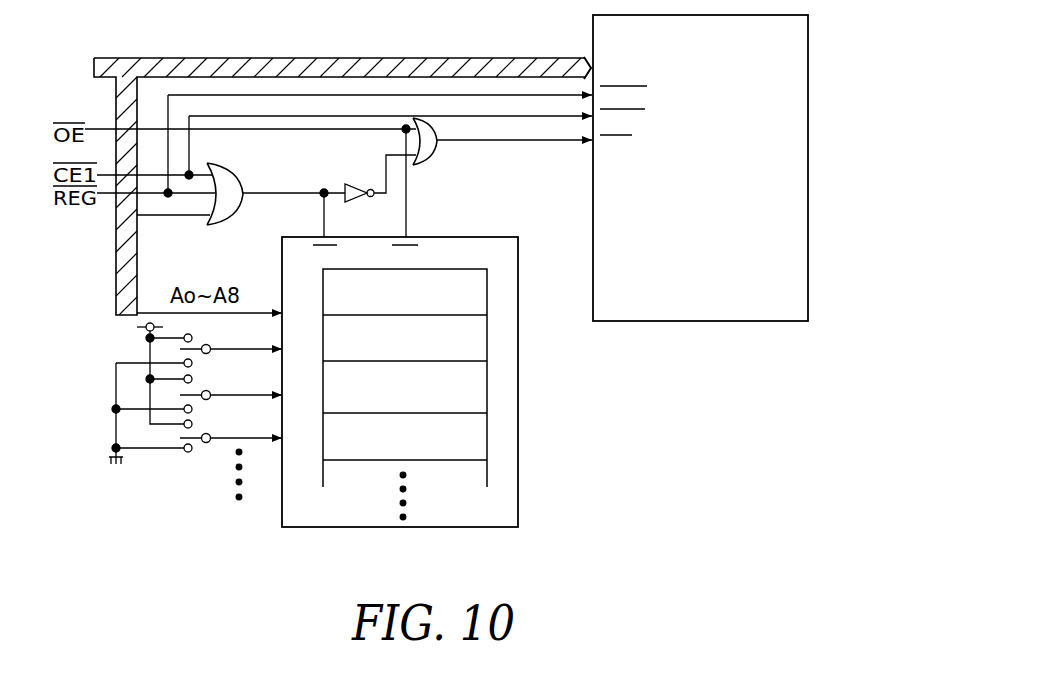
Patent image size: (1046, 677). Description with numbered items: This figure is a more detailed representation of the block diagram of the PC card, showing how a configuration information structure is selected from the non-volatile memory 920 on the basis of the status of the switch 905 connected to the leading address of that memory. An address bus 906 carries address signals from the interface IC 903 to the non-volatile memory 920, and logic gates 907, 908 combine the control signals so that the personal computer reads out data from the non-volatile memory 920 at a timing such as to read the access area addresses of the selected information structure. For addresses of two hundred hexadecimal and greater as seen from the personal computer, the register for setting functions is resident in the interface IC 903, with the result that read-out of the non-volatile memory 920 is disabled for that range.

The address bus 906 is at (314, 166).
The OR gate 907 is at (452, 177).
The OR gate 908 is at (200, 209).
The PCMCIA interface IC 903 is at (760, 168).
The switch 905 is at (186, 411).
The nonvolatile memory 920 is at (528, 367).